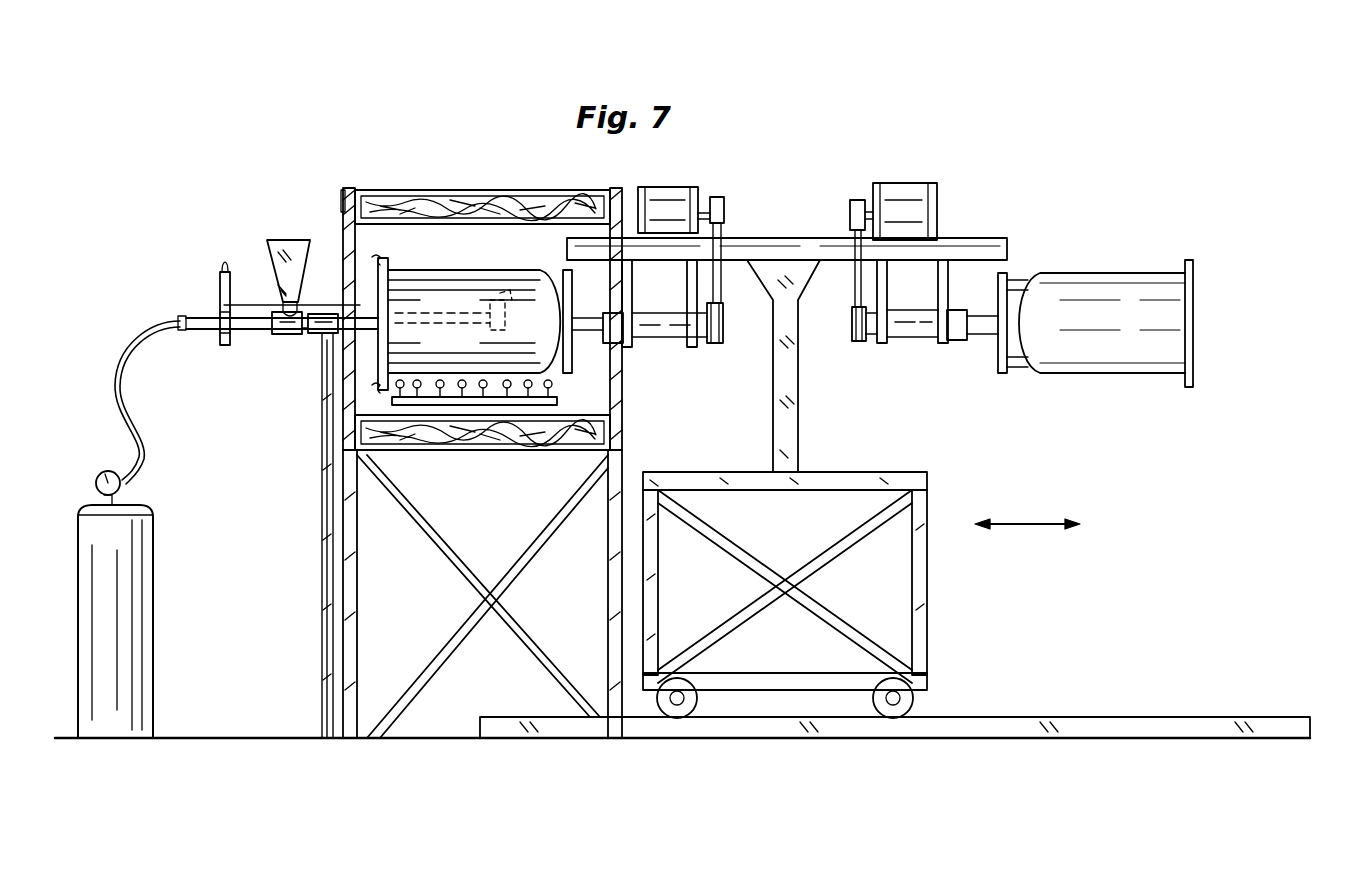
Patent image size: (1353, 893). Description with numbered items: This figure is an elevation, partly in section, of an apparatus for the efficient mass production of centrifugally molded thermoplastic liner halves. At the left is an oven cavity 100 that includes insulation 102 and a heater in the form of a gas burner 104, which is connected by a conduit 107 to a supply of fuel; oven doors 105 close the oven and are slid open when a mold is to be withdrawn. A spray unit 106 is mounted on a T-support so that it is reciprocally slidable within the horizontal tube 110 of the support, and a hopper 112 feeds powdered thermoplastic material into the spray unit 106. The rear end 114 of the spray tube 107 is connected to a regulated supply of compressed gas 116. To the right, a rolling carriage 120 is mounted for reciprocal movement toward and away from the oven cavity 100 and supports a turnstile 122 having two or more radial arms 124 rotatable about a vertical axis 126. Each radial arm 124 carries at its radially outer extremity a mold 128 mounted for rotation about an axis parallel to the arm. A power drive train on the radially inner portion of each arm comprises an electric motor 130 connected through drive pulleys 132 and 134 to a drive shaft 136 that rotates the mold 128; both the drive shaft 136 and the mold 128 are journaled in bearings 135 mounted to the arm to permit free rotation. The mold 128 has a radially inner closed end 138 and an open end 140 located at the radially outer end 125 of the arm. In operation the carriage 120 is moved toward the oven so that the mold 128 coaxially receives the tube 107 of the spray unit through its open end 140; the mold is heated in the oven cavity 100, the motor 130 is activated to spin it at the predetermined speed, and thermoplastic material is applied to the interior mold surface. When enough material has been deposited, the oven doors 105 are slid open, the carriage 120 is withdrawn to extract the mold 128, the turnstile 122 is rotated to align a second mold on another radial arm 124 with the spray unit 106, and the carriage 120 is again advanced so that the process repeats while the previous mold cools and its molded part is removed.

The oven cavity 100 is at (605, 372).
The insulation 102 is at (415, 190).
The gas burner 104 is at (420, 450).
The oven doors 105 is at (343, 222).
The spray unit 106 is at (220, 282).
The conduit 107 is at (513, 483).
The horizontal tube 110 is at (311, 335).
The hopper 112 is at (277, 228).
The rear end 114 is at (180, 323).
The supply of compressed gas 116 is at (155, 600).
The rolling carriage 120 is at (927, 638).
The turnstile 122 is at (816, 229).
The radial arm 124 is at (735, 258).
The radially outer end 125 is at (985, 245).
The vertical axis 126 is at (798, 425).
The mold 128 is at (420, 276).
The electric motor 130 is at (660, 188).
The drive pulley 132 is at (718, 205).
The drive pulley 134 is at (716, 343).
The bearings 135 is at (905, 310).
The drive shaft 136 is at (705, 335).
The closed end 138 is at (550, 383).
The open end 140 is at (1193, 355).